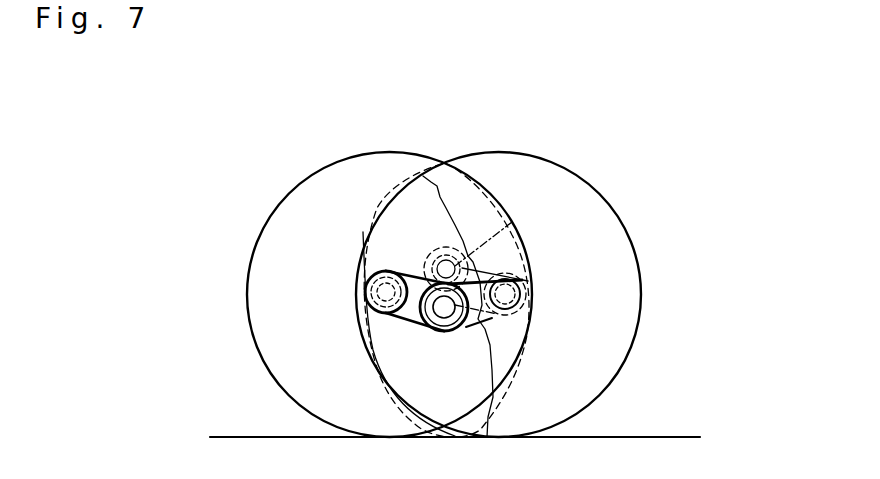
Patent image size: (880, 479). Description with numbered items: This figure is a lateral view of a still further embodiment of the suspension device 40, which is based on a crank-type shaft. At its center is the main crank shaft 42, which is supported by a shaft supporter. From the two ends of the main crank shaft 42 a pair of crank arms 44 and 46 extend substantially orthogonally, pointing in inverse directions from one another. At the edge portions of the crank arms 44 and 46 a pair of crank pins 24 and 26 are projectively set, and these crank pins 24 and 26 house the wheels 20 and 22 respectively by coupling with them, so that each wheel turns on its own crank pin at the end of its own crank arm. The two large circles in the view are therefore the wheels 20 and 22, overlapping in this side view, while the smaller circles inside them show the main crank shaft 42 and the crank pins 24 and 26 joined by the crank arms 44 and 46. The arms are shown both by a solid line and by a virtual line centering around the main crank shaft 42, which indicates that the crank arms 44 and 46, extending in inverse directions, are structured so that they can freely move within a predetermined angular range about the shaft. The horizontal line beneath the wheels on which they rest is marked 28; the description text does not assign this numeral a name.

The wheel 20 is at (604, 222).
The wheel 22 is at (270, 330).
The crank pin 24 is at (510, 289).
The crank pin 26 is at (376, 272).
The floor surface 28 is at (640, 437).
The suspension device 40 is at (405, 228).
The main crank shaft 42 is at (447, 262).
The crank arm 44 is at (512, 222).
The crank arm 46 is at (398, 270).